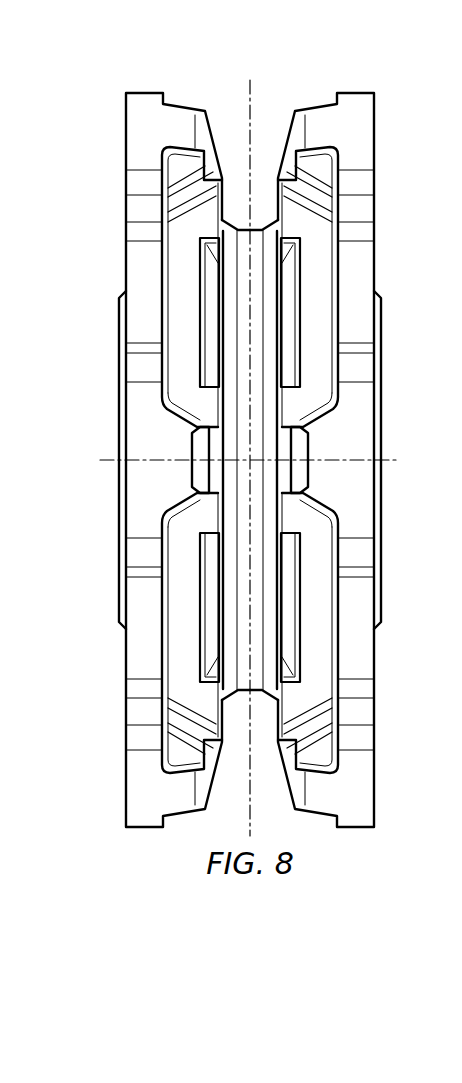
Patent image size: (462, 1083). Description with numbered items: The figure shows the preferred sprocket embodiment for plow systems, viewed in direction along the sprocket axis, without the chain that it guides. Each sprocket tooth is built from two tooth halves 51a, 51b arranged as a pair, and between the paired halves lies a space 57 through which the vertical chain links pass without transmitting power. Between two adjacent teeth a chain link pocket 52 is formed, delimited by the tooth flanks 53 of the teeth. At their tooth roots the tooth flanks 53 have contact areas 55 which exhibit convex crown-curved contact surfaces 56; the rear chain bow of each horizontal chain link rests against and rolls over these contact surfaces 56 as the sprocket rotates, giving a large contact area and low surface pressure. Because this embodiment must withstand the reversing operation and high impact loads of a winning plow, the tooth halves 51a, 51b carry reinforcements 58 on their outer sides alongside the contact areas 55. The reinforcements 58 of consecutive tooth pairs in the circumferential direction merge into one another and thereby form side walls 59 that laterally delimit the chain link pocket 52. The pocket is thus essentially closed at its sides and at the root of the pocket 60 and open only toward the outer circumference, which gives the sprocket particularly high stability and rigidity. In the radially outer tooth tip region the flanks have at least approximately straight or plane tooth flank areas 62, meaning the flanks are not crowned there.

The tooth half 51a is at (177, 116).
The tooth half 51b is at (322, 116).
The chain link pocket 52 is at (288, 281).
The tooth flank 53 is at (179, 166).
The contact area 55 is at (196, 219).
The contact surface 56 is at (218, 193).
The space 57 is at (233, 198).
The reinforcement 58 is at (365, 370).
The side wall 59 is at (365, 323).
The root of the pocket 60 is at (230, 290).
The tooth flank area 62 is at (180, 750).